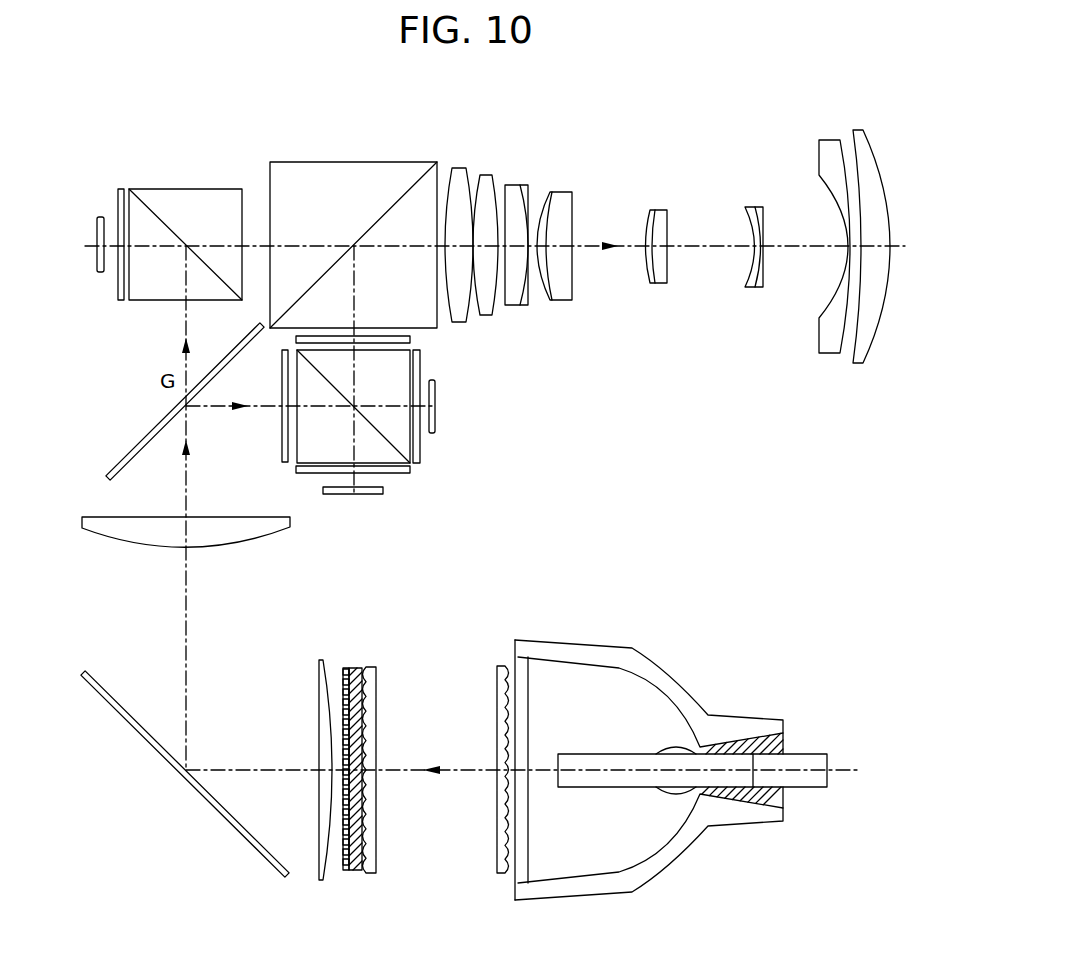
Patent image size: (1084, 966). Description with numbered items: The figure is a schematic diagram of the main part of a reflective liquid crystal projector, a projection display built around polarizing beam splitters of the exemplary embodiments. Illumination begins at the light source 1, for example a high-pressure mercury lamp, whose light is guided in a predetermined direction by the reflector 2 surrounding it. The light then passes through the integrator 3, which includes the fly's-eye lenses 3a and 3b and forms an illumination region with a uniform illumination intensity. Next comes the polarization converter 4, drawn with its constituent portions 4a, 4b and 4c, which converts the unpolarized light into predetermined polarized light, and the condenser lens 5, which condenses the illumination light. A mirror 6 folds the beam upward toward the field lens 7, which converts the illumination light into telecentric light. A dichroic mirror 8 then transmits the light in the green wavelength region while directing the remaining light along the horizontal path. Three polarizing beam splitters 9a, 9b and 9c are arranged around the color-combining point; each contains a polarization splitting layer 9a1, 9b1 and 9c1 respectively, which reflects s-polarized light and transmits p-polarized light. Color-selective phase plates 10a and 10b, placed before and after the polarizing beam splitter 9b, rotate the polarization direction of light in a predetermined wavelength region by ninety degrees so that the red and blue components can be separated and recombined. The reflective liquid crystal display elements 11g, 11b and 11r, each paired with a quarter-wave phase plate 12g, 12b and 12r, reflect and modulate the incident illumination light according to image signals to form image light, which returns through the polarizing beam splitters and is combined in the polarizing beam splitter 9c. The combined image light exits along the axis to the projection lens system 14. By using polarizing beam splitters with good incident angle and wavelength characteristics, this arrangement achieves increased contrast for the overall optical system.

The light source 1 is at (653, 778).
The reflector 2 is at (662, 697).
The integrator 3 is at (492, 590).
The fly's-eye lens 3a is at (497, 673).
The fly's-eye lens 3b is at (380, 683).
The polarization converter 4 is at (415, 925).
The polarization beam splitter array 4a is at (353, 872).
The retardation plates 4b is at (345, 872).
The lens array 4c is at (370, 874).
The condenser lens 5 is at (320, 870).
The mirror 6 is at (100, 697).
The field lens 7 is at (103, 528).
The dichroic mirror 8 is at (140, 442).
The polarizing beam splitter 9a is at (217, 192).
The polarization splitting layer 9a1 is at (153, 203).
The polarizing beam splitter 9b is at (405, 435).
The polarization splitting layer 9b1 is at (408, 455).
The polarizing beam splitter 9c is at (287, 165).
The polarization splitting layer 9c1 is at (421, 177).
The color-selective phase plate 10a is at (282, 443).
The color-selective phase plate 10b is at (410, 340).
The reflective liquid crystal display element 11g is at (97, 227).
The reflective liquid crystal display element 11b is at (436, 392).
The reflective liquid crystal display element 11r is at (340, 495).
The quarter-wave phase plate 12g is at (122, 188).
The quarter-wave phase plate 12b is at (420, 360).
The quarter-wave phase plate 12r is at (400, 475).
The projection lens system 14 is at (712, 123).